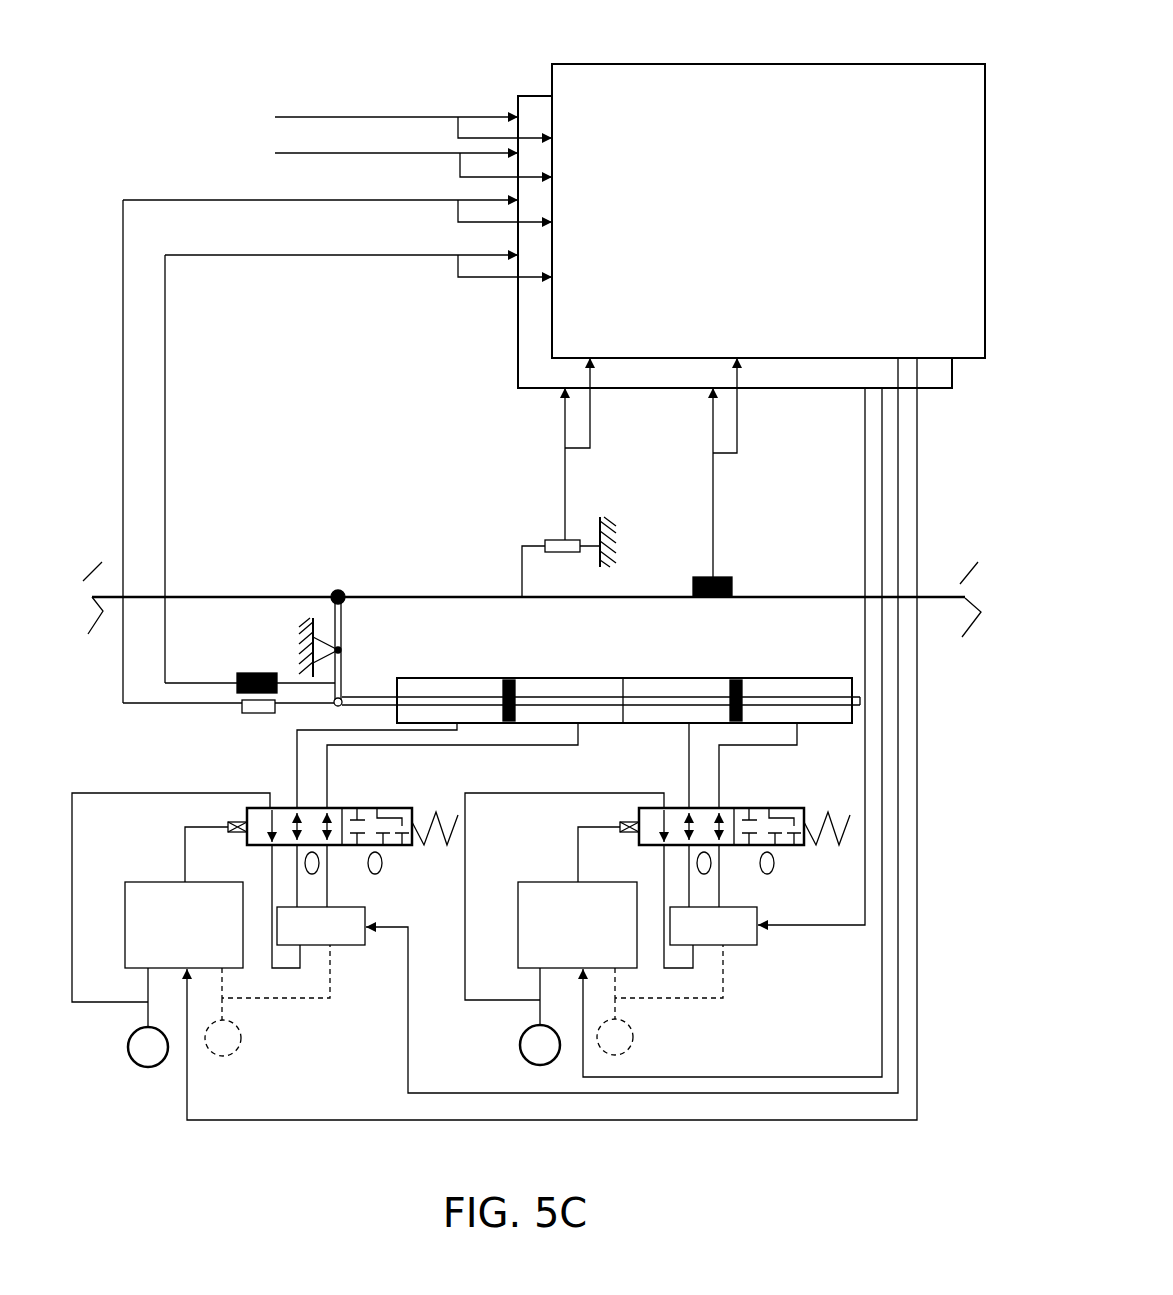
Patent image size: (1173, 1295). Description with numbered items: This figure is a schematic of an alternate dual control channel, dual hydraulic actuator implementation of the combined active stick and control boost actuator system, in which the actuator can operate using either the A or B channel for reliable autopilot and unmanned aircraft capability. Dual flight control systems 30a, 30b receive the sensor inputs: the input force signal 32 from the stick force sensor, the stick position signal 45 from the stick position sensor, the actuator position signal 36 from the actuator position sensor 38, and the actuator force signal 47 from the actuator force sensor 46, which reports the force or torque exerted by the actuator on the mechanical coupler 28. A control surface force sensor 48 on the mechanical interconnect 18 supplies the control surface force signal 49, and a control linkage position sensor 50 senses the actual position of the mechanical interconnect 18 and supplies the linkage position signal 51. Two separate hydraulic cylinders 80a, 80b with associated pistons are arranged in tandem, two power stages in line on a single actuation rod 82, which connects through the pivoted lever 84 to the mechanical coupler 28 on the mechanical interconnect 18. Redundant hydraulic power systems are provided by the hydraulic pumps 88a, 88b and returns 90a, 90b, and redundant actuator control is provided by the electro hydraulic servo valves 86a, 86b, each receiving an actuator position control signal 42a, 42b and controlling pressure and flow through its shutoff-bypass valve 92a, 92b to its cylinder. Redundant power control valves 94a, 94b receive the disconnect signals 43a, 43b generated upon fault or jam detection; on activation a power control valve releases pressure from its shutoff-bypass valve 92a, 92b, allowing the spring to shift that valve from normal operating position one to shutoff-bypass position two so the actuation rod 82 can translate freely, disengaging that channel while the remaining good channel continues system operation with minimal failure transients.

The mechanical interconnect 18 is at (453, 597).
The mechanical coupler 28 is at (334, 590).
The flight control system 30a is at (518, 332).
The flight control system 30b is at (790, 63).
The input force signal 32 is at (340, 153).
The actuator position signal 36 is at (352, 200).
The actuator position sensor 38 is at (262, 713).
The actuator position control signal 42a is at (455, 1093).
The actuator position control signal 42b is at (800, 926).
The disconnect signal 43a is at (365, 1120).
The disconnect signal 43b is at (737, 1077).
The stick position signal 45 is at (340, 117).
The actuator force sensor 46 is at (258, 673).
The actuator force signal 47 is at (390, 255).
The control surface force sensor 48 is at (718, 577).
The control surface force signal 49 is at (713, 505).
The control linkage position sensor 50 is at (568, 540).
The linkage position signal 51 is at (565, 480).
The hydraulic cylinder 80a is at (530, 678).
The hydraulic cylinder 80b is at (750, 678).
The actuation rod 82 is at (383, 695).
The pivoted lever 84 is at (342, 668).
The electro hydraulic servo valve 86a is at (334, 918).
The electro hydraulic servo valve 86b is at (738, 945).
The hydraulic pump 88a is at (136, 1062).
The hydraulic pump 88b is at (522, 1035).
The return 90a is at (235, 1052).
The return 90b is at (636, 1030).
The shutoff-bypass valve 92a is at (392, 848).
The shutoff-bypass valve 92b is at (787, 848).
The power control valve 94a is at (167, 882).
The power control valve 94b is at (557, 882).